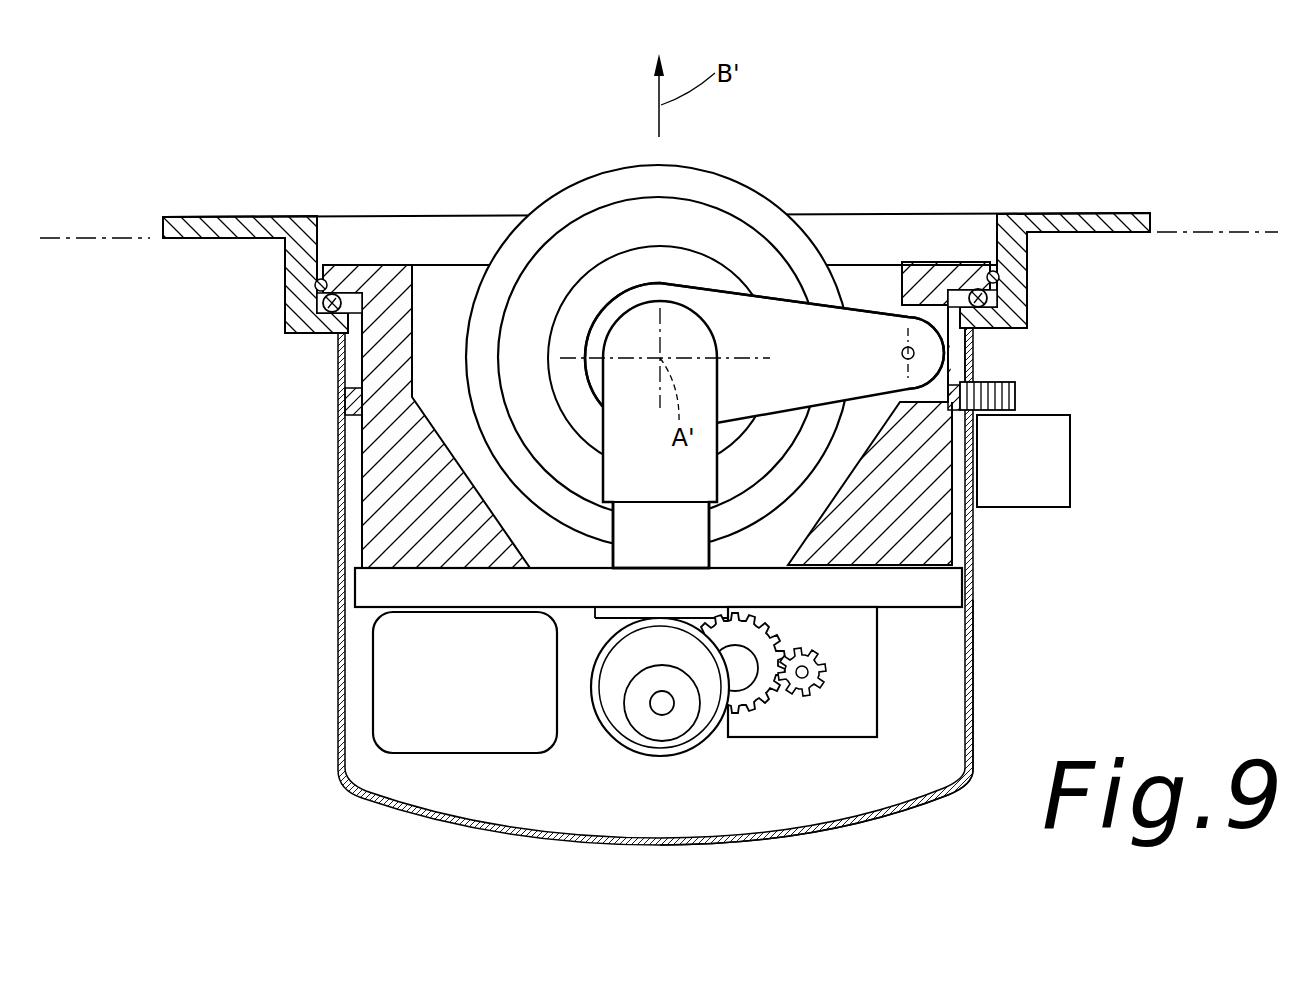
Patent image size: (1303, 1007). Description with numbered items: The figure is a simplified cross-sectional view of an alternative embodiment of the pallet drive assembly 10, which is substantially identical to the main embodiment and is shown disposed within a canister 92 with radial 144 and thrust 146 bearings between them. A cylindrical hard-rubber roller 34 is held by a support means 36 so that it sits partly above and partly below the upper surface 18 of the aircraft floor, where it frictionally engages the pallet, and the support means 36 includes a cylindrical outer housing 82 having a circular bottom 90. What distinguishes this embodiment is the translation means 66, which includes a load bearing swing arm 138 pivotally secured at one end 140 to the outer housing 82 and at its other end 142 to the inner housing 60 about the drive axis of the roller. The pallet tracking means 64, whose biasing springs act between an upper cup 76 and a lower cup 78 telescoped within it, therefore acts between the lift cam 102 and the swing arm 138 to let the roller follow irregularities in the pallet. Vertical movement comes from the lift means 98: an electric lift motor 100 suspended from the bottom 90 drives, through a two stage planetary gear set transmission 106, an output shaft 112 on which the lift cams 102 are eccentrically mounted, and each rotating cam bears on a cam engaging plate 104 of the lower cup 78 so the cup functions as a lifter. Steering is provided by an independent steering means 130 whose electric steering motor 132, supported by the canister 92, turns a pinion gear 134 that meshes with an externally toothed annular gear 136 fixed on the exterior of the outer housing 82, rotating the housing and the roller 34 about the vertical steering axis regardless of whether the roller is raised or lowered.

The assembly 10 is at (982, 165).
The upper surface 18 is at (1232, 232).
The cylindrical roller 34 is at (763, 197).
The support means 36 is at (1087, 210).
The left inner housing 60 is at (602, 258).
The pallet tracking means 64 is at (606, 458).
The translation means 66 is at (787, 416).
The upper cup 76 is at (730, 425).
The lower cup 78 is at (617, 550).
The outer housing 82 is at (952, 540).
The bottom 90 is at (933, 607).
The canister 92 is at (975, 690).
The lift means 98 is at (826, 742).
The lift motor 100 is at (880, 680).
The lift cam 102 is at (598, 725).
The cam engaging plate 104 is at (603, 613).
The two stage planetary gear set transmission 106 is at (750, 712).
The output shaft 112 is at (661, 706).
The steering means 130 is at (1077, 412).
The steering motor 132 is at (1060, 478).
The pinion gear 134 is at (1008, 383).
The annular gear 136 is at (345, 402).
The load bearing swing arm 138 is at (828, 312).
The one end 140 is at (950, 345).
The other end 142 is at (593, 318).
The radial bearing 144 is at (318, 287).
The thrust bearing 146 is at (330, 307).